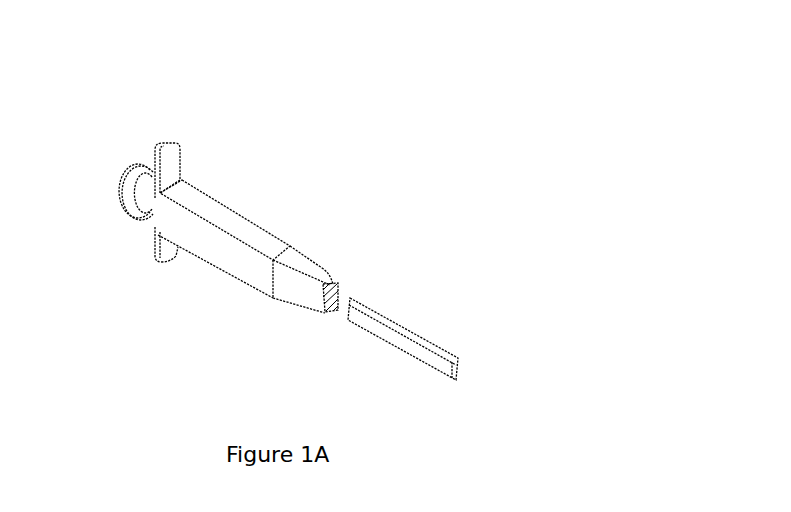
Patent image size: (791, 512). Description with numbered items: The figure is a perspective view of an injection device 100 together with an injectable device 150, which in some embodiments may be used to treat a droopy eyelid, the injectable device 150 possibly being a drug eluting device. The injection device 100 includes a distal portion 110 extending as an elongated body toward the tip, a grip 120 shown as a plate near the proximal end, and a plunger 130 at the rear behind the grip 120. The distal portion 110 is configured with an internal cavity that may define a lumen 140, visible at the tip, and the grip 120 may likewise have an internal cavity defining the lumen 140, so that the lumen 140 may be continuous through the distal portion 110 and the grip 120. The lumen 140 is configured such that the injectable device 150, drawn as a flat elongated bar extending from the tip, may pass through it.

The injection device 100 is at (328, 140).
The distal portion 110 is at (297, 298).
The grip 120 is at (215, 253).
The plunger 130 is at (132, 178).
The lumen 140 is at (334, 290).
The injectable device 150 is at (412, 347).